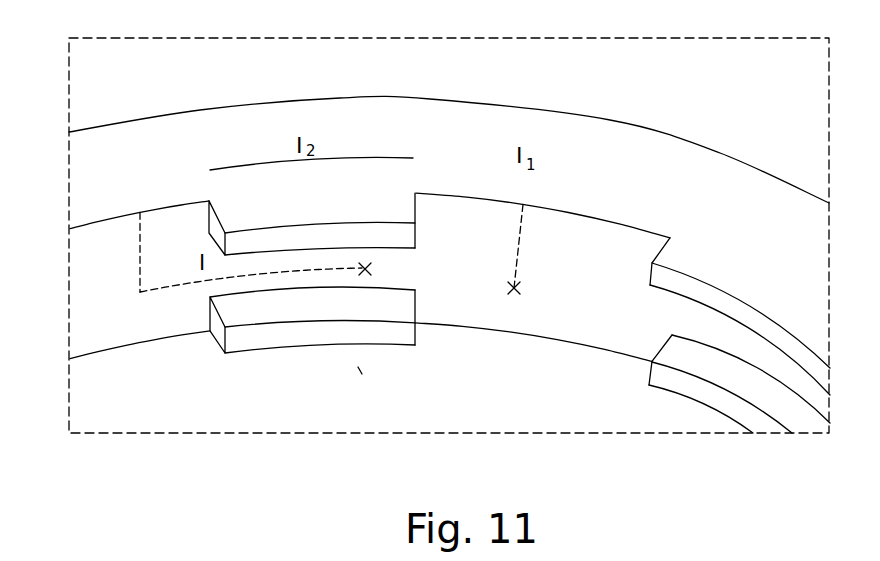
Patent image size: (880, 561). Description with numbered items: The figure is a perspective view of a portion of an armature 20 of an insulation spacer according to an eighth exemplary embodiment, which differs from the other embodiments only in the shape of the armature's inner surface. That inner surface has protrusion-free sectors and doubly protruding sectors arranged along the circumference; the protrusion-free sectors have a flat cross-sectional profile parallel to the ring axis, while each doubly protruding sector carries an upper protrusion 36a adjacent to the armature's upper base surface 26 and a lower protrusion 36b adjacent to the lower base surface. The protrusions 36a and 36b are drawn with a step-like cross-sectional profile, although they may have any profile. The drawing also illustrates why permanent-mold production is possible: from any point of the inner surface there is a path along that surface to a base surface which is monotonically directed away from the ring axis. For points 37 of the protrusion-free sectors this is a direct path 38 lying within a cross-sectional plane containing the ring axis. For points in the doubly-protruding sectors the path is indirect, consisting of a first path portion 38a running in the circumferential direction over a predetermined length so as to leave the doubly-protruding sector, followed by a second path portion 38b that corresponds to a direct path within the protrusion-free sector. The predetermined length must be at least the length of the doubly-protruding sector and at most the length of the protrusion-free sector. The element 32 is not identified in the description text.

The armature 20 is at (600, 100).
The upper base surface 26 is at (162, 137).
The core segment body 32 is at (98, 247).
The upper protrusion 36a is at (342, 215).
The lower protrusion 36b is at (283, 333).
The points 37 is at (365, 274).
The direct path 38 is at (523, 237).
The first path portion 38a is at (190, 282).
The second path portion 38b is at (142, 277).